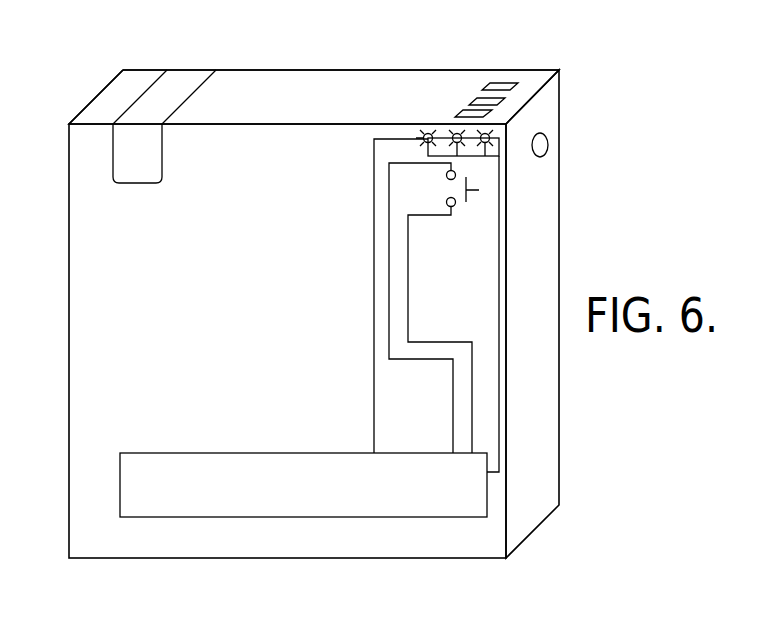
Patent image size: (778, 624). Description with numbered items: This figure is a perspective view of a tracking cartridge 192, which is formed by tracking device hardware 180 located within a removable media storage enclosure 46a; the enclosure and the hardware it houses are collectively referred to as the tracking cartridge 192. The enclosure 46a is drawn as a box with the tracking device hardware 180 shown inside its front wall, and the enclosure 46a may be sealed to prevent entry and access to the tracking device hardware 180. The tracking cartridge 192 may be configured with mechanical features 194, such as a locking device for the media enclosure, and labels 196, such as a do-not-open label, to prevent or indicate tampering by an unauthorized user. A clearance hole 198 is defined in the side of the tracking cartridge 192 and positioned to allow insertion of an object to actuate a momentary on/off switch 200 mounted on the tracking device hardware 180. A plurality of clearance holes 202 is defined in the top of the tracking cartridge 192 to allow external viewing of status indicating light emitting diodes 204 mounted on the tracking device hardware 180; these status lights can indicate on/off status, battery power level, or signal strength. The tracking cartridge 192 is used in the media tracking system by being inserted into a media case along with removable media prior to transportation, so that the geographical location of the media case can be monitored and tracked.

The tracking cartridge 192 is at (244, 64).
The mechanical features 194 is at (83, 112).
The removable media storage enclosure 46a is at (330, 78).
The labels 196 is at (180, 75).
The clearance hole 198 is at (548, 145).
The clearance holes 202 is at (467, 110).
The status indicating light emitting diodes 204 is at (485, 133).
The momentary on/off switch 200 is at (457, 213).
The tracking device hardware 180 is at (463, 518).